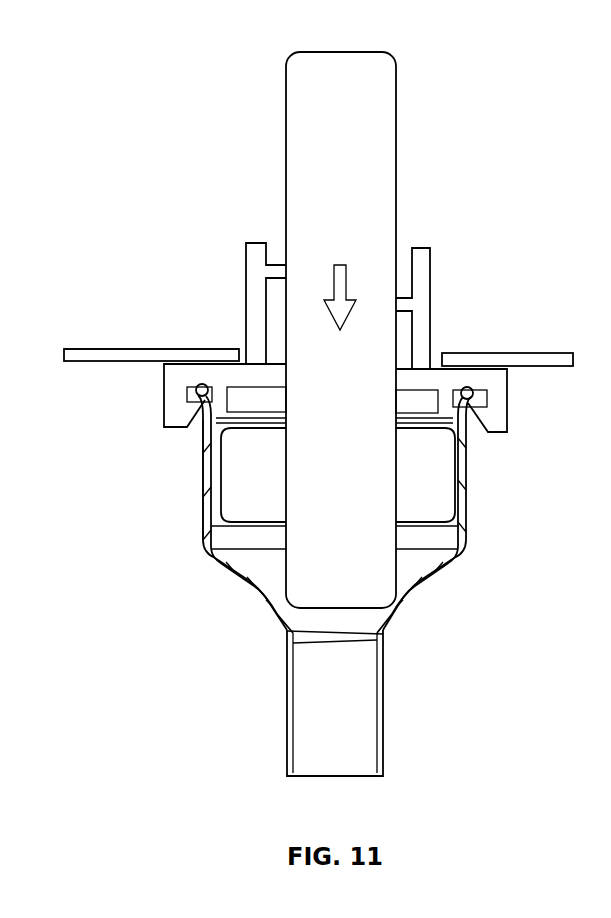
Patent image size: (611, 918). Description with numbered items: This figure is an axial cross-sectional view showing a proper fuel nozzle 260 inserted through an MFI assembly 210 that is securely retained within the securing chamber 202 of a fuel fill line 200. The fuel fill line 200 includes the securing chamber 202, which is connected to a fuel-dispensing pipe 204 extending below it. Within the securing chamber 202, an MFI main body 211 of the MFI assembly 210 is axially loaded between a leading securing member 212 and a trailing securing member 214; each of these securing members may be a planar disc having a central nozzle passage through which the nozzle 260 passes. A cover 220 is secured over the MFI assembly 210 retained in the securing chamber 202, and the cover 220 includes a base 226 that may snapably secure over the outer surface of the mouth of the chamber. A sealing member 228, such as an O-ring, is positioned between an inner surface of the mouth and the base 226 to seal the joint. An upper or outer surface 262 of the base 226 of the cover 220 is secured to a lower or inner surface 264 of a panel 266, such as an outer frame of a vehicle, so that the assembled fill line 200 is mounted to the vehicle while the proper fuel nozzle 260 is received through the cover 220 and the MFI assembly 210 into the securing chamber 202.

The fuel fill line 200 is at (349, 581).
The securing chamber 202 is at (466, 512).
The fuel-dispensing pipe 204 is at (383, 708).
The MFI assembly 210 is at (458, 477).
The MFI main body 211 is at (447, 460).
The leading securing member 212 is at (238, 546).
The trailing securing member 214 is at (205, 433).
The cover 220 is at (430, 272).
The base 226 is at (507, 399).
The sealing member 228 is at (467, 387).
The proper fuel nozzle 260 is at (395, 190).
The outer surface of the base 262 is at (160, 363).
The inner surface of the panel 264 is at (85, 361).
The panel 266 is at (155, 336).